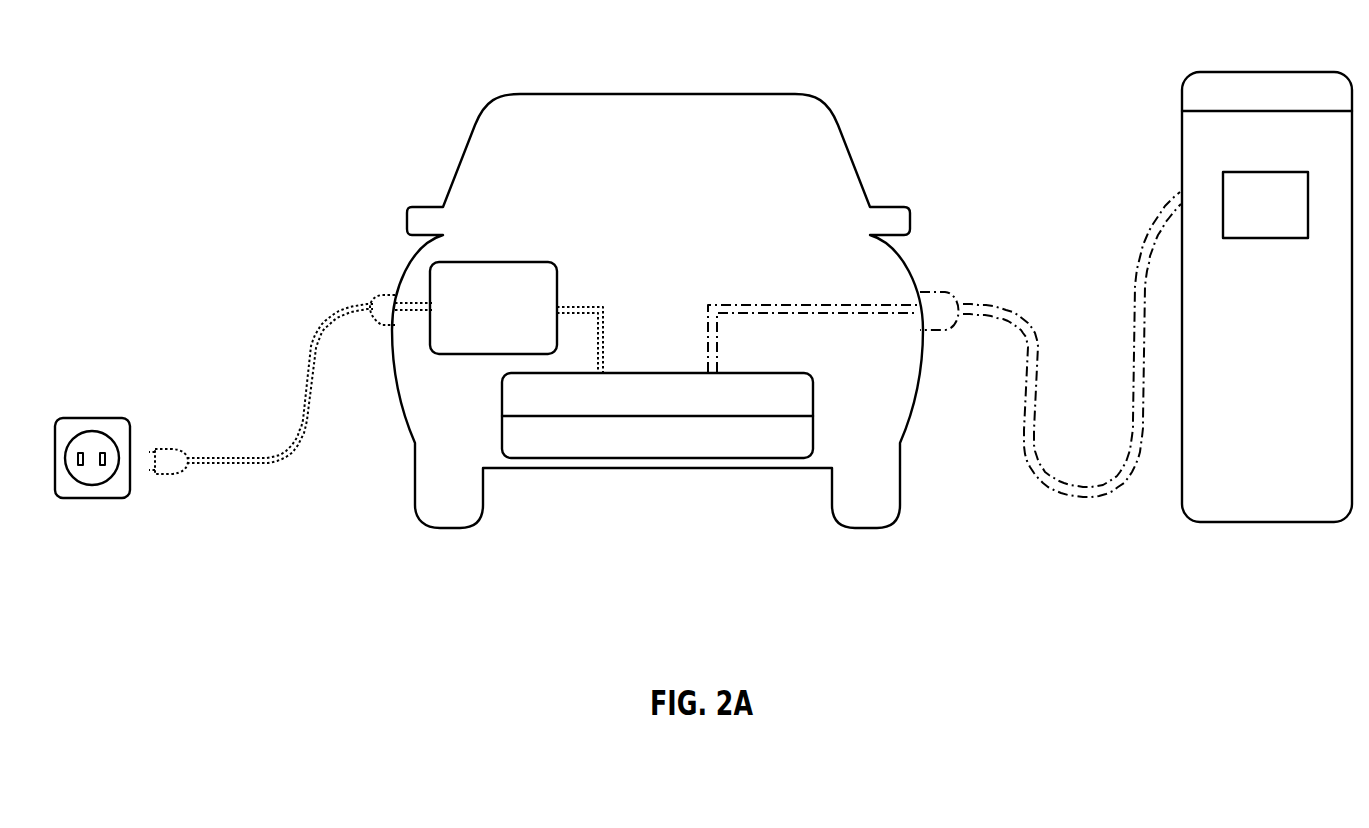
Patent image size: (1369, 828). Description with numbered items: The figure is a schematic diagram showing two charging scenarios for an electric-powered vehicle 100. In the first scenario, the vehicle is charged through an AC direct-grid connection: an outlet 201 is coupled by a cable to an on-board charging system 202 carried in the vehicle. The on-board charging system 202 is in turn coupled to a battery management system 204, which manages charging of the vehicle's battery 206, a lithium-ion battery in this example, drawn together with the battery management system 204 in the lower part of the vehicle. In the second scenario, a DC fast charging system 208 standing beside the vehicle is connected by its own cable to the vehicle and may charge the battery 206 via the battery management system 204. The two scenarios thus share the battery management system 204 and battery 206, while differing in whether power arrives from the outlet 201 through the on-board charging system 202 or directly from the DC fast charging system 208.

The vehicle 100 is at (657, 110).
The outlet 201 is at (92, 418).
The on-board charging system 202 is at (515, 321).
The battery management system (BMS) 204 is at (678, 408).
The battery 206 is at (678, 451).
The DC fast charging system 208 is at (1267, 503).